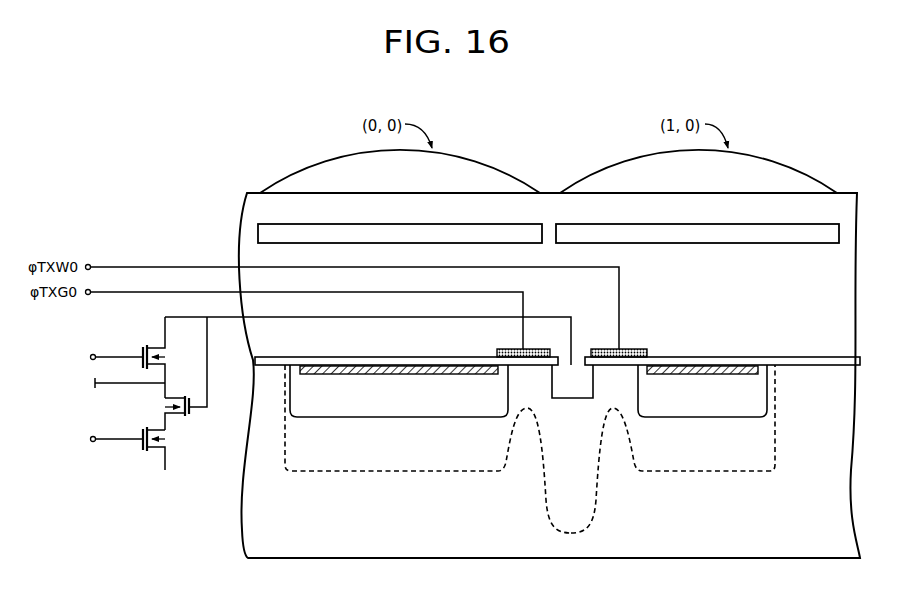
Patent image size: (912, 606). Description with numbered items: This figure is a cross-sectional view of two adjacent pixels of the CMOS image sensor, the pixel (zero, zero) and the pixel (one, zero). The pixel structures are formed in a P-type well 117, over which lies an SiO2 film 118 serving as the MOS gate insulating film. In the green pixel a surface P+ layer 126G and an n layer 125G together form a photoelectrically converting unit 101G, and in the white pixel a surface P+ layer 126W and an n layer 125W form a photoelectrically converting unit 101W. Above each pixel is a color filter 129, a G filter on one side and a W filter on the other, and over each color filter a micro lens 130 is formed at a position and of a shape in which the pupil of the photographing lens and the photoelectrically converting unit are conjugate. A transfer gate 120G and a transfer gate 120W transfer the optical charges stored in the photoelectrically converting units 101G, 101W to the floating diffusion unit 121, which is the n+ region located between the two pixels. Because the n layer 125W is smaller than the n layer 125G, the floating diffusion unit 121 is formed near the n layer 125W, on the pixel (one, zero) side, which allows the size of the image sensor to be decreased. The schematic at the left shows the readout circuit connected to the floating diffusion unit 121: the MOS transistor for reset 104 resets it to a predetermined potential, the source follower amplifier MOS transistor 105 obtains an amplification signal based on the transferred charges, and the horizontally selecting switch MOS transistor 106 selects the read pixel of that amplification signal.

The photoelectrically converting unit 101G is at (428, 449).
The photoelectrically converting unit 101W is at (679, 449).
The MOS transistor for reset 104 is at (110, 357).
The source follower amplifier MOS transistor 105 is at (193, 416).
The horizontally selecting switch MOS transistor 106 is at (110, 449).
The P-type well 117 is at (549, 375).
The SiO2 film 118 is at (860, 359).
The transfer gate 120G is at (502, 349).
The transfer gate 120W is at (636, 349).
The floating diffusion unit 121 is at (572, 394).
The n layer 125G is at (399, 391).
The n layer 125W is at (702, 391).
The surface P+ layer 126G is at (343, 365).
The surface P+ layer 126W is at (740, 365).
The color filter 129 is at (308, 228).
The micro lens 130 is at (548, 171).